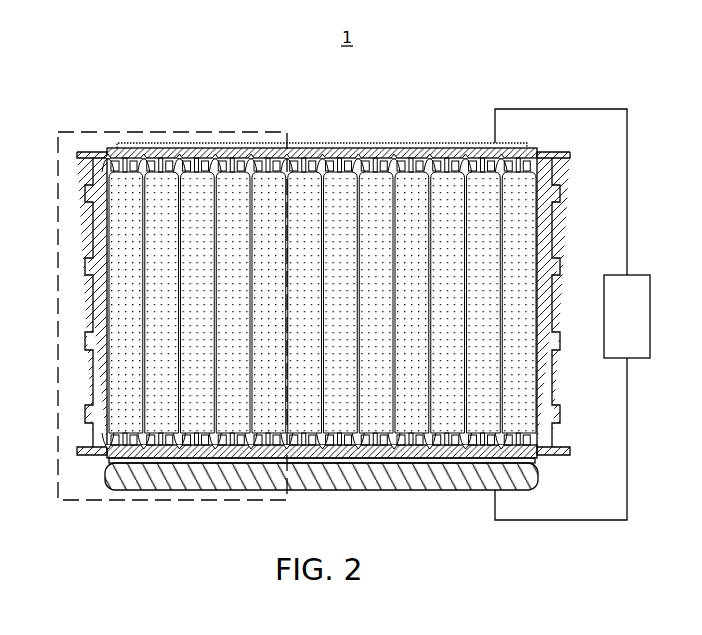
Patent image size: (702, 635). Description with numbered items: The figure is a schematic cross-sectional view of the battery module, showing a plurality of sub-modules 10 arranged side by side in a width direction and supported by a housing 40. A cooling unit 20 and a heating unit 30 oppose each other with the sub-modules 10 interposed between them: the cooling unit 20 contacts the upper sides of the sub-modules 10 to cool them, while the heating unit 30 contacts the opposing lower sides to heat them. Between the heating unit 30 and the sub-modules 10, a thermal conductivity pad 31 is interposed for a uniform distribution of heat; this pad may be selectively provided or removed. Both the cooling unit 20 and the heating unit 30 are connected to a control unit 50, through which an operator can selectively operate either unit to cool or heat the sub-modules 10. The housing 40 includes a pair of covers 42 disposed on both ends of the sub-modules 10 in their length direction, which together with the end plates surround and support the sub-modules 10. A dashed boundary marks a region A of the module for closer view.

The sub-modules 10 is at (154, 147).
The cooling unit 20 is at (421, 141).
The heating unit 30 is at (462, 490).
The thermal conductivity pad 31 is at (440, 463).
The housing 40 is at (323, 257).
The covers 42 is at (91, 170).
The control unit 50 is at (616, 360).
The enlarged region A is at (90, 503).